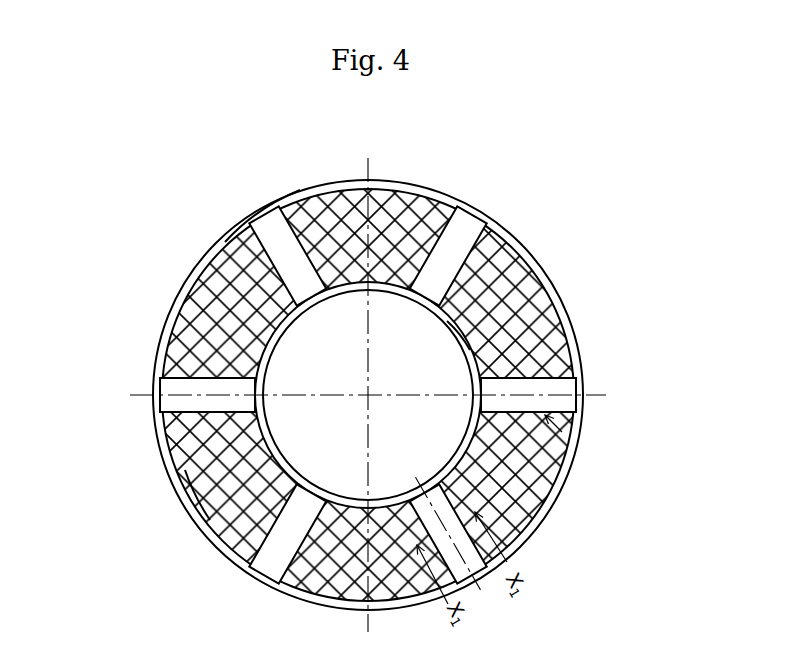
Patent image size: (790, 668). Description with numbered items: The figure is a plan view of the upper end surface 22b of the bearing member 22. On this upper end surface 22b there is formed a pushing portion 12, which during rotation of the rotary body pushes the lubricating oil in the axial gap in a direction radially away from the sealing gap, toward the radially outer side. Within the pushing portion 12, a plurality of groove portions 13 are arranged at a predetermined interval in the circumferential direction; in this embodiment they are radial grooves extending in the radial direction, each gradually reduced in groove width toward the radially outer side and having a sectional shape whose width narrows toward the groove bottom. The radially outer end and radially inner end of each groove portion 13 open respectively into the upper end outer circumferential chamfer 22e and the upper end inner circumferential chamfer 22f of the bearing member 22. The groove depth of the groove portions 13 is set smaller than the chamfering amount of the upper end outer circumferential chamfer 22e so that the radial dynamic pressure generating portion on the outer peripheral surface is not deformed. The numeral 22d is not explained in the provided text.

The pushing portion 12 is at (562, 432).
The groove portions 13 is at (465, 228).
The bearing member 22 is at (159, 458).
The upper end surface 22b is at (208, 520).
The inner peripheral surface 22d is at (452, 328).
The upper end outer circumferential chamfer 22e is at (220, 250).
The upper end inner circumferential chamfer 22f is at (277, 331).